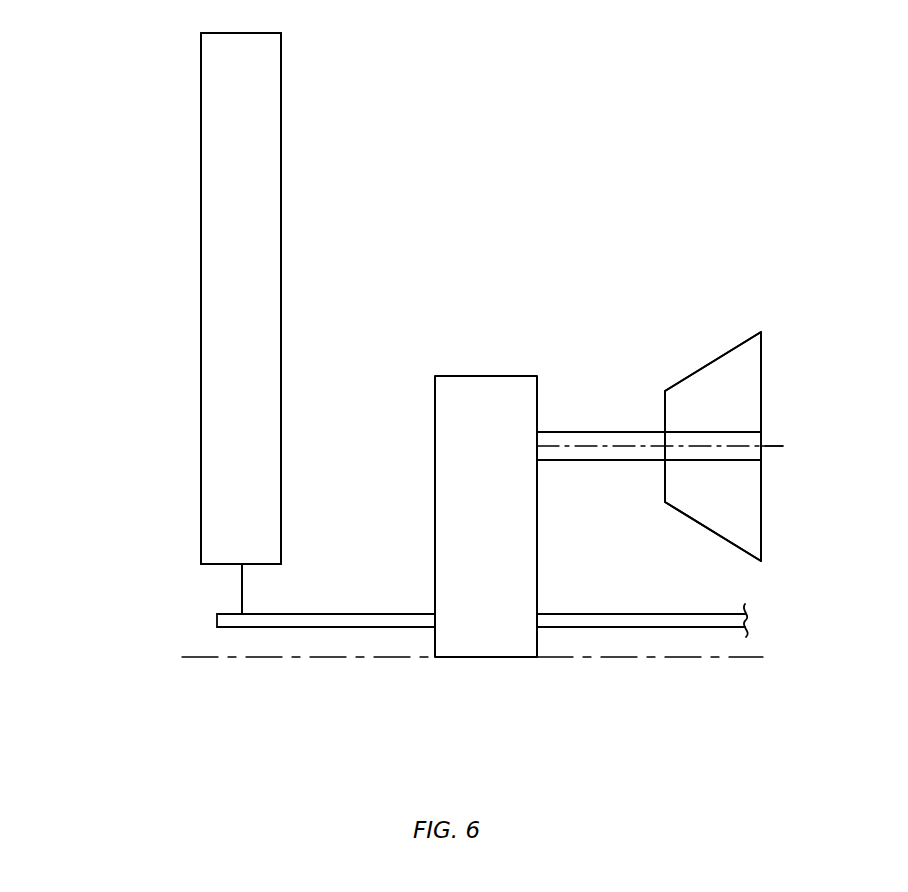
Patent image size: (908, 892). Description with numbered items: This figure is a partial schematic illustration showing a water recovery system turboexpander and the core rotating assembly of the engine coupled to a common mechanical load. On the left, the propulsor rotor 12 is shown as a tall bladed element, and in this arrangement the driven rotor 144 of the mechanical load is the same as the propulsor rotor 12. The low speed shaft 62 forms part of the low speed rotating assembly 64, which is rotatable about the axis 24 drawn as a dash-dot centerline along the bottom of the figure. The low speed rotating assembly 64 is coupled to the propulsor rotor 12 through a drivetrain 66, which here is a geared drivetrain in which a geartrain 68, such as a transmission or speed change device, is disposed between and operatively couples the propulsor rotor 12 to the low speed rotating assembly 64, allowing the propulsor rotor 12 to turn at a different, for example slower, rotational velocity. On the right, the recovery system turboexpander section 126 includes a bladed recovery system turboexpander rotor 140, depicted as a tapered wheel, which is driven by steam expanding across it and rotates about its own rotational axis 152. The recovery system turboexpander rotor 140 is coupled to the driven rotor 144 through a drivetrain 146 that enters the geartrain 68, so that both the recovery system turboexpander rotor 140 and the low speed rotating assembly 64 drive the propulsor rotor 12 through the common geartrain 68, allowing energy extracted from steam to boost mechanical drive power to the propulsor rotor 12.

The propulsor rotor 12 is at (201, 300).
The driven rotor 144 is at (241, 298).
The axis 24 is at (192, 658).
The low speed shaft 62 is at (640, 613).
The low speed rotating assembly 64 is at (481, 620).
The drivetrain 66 is at (418, 688).
The geartrain 68 is at (503, 551).
The recovery system turboexpander section 126 is at (777, 320).
The recovery system turboexpander rotor 140 is at (761, 396).
The drivetrain 146 is at (602, 432).
The rotational axis 152 is at (775, 448).